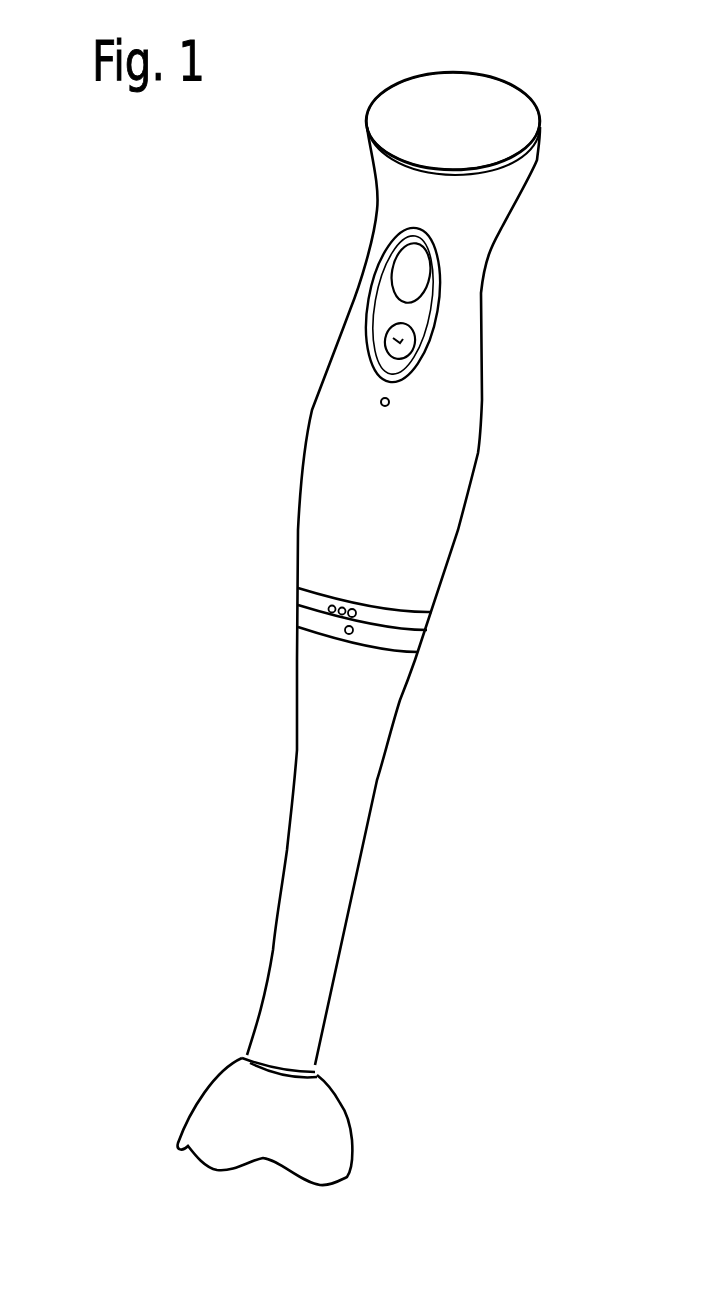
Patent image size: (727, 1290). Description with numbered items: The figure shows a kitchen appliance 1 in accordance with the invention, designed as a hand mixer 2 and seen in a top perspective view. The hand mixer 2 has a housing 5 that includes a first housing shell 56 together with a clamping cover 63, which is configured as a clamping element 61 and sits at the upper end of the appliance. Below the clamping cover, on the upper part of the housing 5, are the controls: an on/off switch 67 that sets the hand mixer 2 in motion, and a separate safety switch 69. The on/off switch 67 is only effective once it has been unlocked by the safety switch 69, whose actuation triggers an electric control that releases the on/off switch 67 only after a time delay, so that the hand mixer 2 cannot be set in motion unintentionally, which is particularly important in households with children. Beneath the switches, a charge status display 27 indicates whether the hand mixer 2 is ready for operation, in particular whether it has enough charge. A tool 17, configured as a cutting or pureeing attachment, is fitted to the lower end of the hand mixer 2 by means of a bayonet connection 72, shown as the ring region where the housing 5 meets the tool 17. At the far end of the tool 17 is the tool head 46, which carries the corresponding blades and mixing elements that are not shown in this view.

The kitchen appliance 1 is at (156, 242).
The hand mixer 2 is at (460, 462).
The housing 5 is at (310, 525).
The tool 17 is at (345, 772).
The charge status display 27 is at (390, 400).
The tool head 46 is at (328, 1127).
The first housing shell 56 is at (323, 460).
The clamping element 61 is at (517, 123).
The clamping cover 63 is at (410, 105).
The on/off switch 67 is at (417, 273).
The safety switch 69 is at (400, 333).
The bayonet connection 72 is at (435, 633).